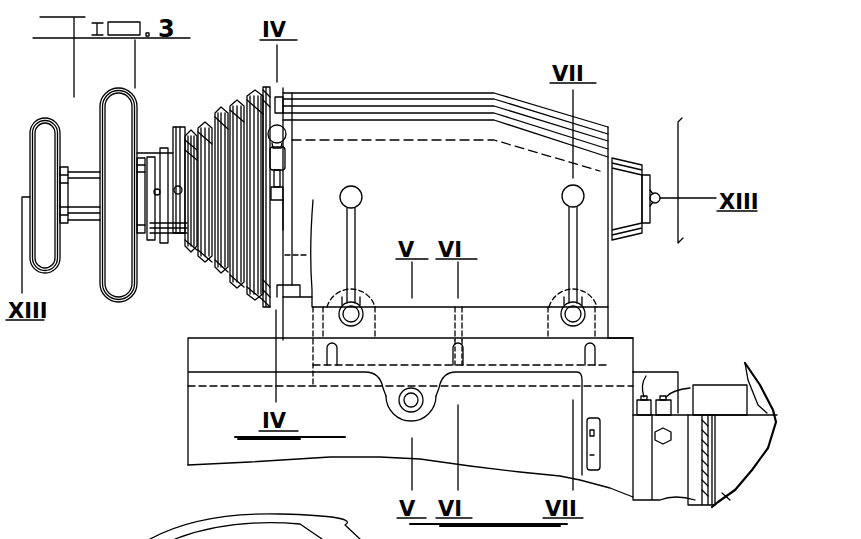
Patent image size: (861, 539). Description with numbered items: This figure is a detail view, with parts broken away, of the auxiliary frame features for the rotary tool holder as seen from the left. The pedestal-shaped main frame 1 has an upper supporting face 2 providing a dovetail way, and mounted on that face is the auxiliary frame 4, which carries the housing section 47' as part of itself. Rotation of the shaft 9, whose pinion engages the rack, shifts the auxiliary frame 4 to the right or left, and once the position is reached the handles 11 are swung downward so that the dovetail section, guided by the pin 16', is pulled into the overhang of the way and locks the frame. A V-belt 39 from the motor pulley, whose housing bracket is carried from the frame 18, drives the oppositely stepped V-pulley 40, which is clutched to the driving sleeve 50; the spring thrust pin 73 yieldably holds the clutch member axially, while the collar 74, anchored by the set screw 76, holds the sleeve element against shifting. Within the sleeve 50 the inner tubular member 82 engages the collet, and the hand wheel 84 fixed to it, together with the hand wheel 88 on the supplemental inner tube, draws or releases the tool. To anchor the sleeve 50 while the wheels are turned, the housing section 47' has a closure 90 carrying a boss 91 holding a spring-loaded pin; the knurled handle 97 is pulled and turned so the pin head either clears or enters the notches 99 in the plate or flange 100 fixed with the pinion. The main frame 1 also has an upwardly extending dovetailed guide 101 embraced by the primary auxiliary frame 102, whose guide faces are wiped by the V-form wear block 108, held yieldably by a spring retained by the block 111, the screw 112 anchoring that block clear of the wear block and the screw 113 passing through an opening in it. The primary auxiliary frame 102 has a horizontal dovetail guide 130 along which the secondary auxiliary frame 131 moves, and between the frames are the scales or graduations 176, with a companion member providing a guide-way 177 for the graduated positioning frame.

The main frame 1 is at (193, 425).
The supporting face 2 is at (638, 342).
The auxiliary frame 4 is at (610, 327).
The shaft 9 is at (400, 401).
The handles 11 is at (357, 236).
The pin 16' is at (479, 338).
The frame 18 is at (648, 177).
The V-belt 39 is at (262, 301).
The stepped V-pulley 40 is at (220, 283).
The housing section 47' is at (445, 204).
The sleeve 50 is at (628, 160).
The spring thrust pin 73 is at (175, 187).
The collar 74 is at (156, 238).
The set screw 76 is at (157, 165).
The inner tubular member 82 is at (81, 223).
The hand wheel 84 is at (113, 303).
The hand wheel 88 is at (38, 270).
The closure 90 is at (290, 98).
The boss 91 is at (286, 159).
The knurled handle 97 is at (287, 136).
The notches 99 is at (286, 187).
The plate or flange 100 is at (270, 216).
The dovetailed guide 101 is at (672, 372).
The primary auxiliary frame 102 is at (726, 480).
The wear block 108 is at (637, 410).
The block 111 is at (680, 404).
The screw 112 is at (690, 388).
The screw 113 is at (646, 376).
The horizontally-extending guide 130 is at (721, 416).
The secondary auxiliary frame 131 is at (750, 373).
The scales or graduations 176 is at (588, 427).
The guide-way 177 is at (640, 492).